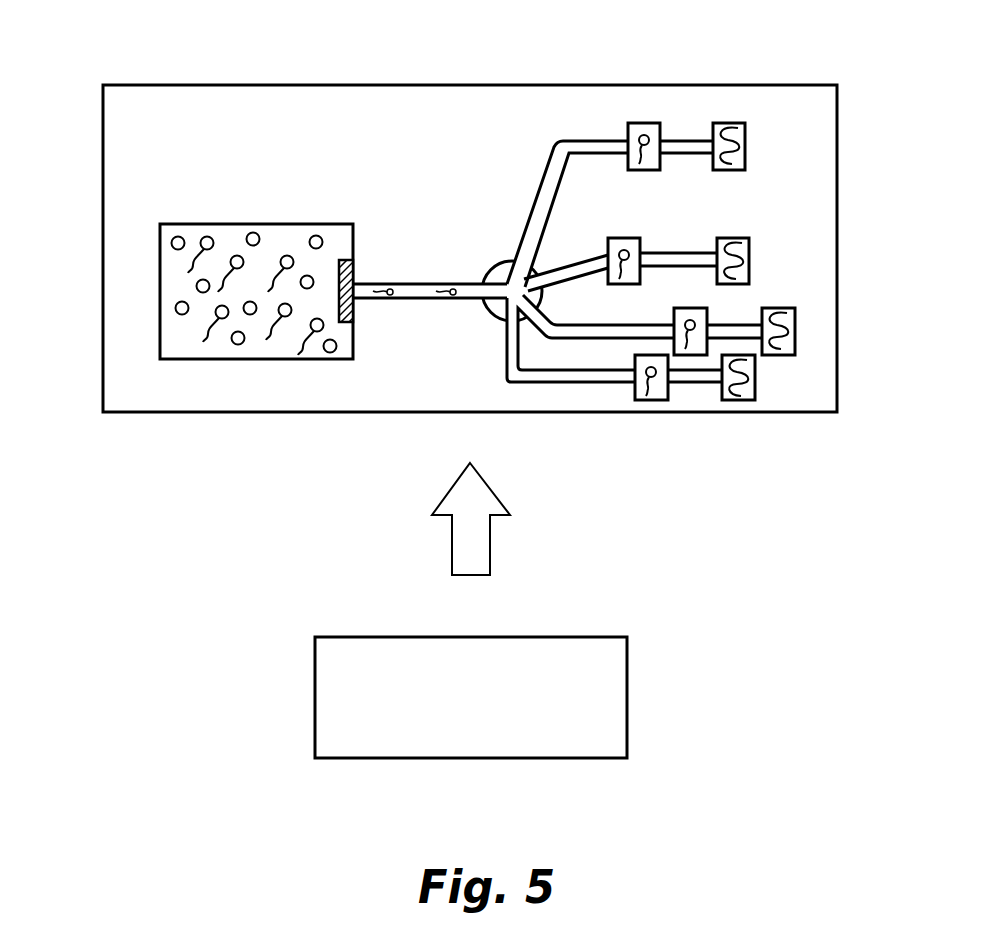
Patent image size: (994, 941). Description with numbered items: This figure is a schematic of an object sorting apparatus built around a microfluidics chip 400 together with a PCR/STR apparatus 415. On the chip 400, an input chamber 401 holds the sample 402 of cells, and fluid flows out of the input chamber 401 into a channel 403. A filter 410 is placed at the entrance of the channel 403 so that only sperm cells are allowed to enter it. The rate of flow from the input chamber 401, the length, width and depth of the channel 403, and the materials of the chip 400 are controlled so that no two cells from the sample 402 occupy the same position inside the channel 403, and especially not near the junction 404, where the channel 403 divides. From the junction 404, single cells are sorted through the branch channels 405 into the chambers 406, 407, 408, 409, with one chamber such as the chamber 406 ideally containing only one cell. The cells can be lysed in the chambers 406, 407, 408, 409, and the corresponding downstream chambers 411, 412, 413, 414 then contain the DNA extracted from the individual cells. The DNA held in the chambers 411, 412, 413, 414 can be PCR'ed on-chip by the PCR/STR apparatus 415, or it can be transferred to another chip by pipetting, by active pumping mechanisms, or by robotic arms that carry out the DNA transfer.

The microfluidics chip 400 is at (838, 128).
The input chamber 401 is at (177, 223).
The sample 402 is at (177, 337).
The channel 403 is at (418, 283).
The junction 404 is at (489, 268).
The channels 405 is at (582, 140).
The chamber 406 is at (652, 123).
The chamber 407 is at (615, 238).
The chamber 408 is at (678, 308).
The chamber 409 is at (643, 401).
The filter 410 is at (342, 262).
The chamber 411 is at (722, 123).
The chamber 412 is at (725, 238).
The chamber 413 is at (795, 318).
The chamber 414 is at (733, 401).
The PCR/STR apparatus 415 is at (627, 687).